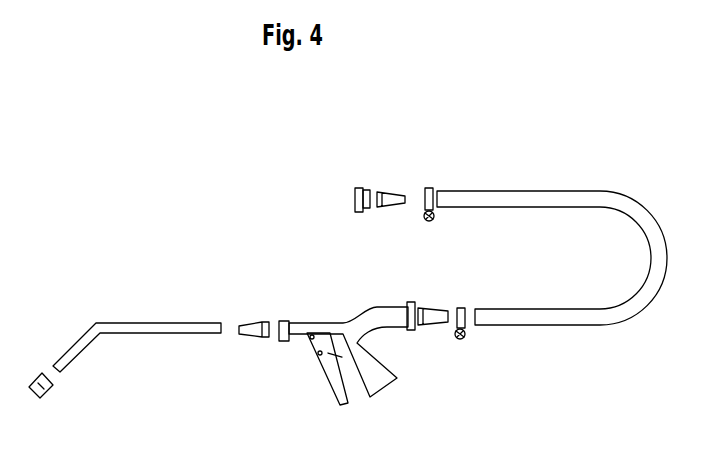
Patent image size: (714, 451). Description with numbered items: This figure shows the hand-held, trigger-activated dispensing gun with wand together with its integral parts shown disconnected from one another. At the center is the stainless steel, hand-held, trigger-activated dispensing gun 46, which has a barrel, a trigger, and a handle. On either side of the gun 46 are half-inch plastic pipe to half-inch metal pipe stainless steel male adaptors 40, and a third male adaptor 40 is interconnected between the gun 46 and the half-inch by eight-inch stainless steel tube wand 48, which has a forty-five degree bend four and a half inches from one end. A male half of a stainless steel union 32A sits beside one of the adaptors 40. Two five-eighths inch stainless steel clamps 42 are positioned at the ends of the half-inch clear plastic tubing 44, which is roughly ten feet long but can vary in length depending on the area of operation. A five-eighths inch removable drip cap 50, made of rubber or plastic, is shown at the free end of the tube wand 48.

The male half of a stainless steel union 32A is at (356, 205).
The stainless steel male adaptor 40 is at (394, 197).
The stainless steel clamp 42 is at (427, 189).
The clear plastic tubing 44 is at (507, 198).
The hand-held, trigger activated dispensing gun with wand 46 is at (368, 373).
The stainless steel tube 48 is at (152, 328).
The removable drip cap 50 is at (42, 390).